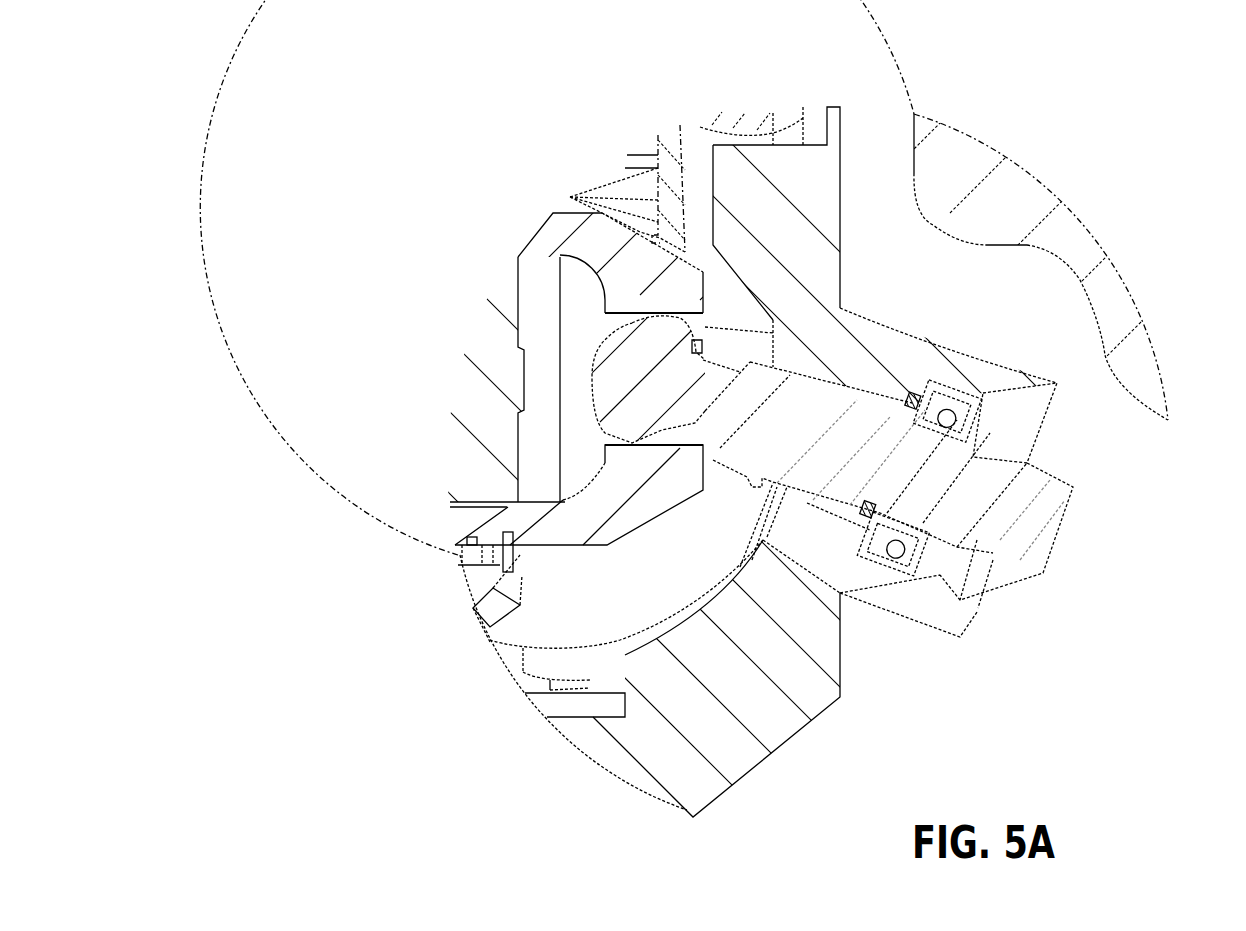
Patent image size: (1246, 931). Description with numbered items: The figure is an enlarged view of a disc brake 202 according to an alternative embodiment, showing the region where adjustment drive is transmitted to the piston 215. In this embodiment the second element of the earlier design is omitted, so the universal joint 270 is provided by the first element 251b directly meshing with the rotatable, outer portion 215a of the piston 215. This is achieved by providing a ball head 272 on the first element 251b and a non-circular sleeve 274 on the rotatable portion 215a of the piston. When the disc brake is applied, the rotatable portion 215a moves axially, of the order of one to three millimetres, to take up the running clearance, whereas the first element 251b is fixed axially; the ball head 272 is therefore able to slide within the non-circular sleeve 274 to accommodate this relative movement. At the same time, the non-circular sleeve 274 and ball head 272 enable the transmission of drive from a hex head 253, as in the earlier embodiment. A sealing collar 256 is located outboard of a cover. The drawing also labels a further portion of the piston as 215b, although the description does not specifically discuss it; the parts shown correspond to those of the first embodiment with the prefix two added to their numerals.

The disc brake 202 is at (476, 124).
The piston 215 is at (442, 366).
The rotatable outer portion of the piston 215a is at (458, 533).
The housing wall 215b is at (473, 450).
The universal joint 270 is at (588, 318).
The ball head 272 is at (655, 343).
The non-circular sleeve 274 is at (697, 323).
The sealing collar 256 is at (952, 398).
The first element 251b is at (970, 458).
The hex head 253 is at (1046, 527).